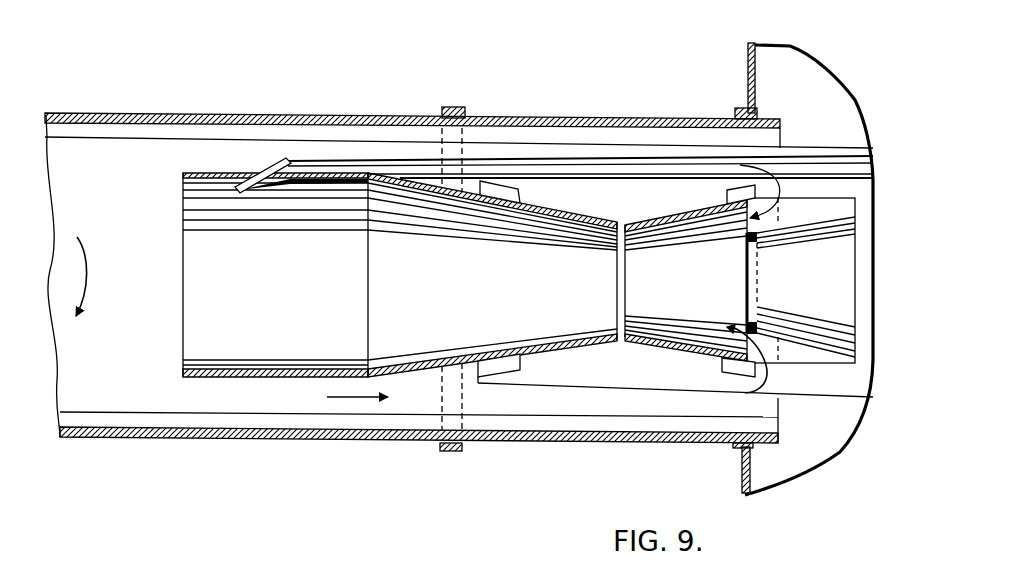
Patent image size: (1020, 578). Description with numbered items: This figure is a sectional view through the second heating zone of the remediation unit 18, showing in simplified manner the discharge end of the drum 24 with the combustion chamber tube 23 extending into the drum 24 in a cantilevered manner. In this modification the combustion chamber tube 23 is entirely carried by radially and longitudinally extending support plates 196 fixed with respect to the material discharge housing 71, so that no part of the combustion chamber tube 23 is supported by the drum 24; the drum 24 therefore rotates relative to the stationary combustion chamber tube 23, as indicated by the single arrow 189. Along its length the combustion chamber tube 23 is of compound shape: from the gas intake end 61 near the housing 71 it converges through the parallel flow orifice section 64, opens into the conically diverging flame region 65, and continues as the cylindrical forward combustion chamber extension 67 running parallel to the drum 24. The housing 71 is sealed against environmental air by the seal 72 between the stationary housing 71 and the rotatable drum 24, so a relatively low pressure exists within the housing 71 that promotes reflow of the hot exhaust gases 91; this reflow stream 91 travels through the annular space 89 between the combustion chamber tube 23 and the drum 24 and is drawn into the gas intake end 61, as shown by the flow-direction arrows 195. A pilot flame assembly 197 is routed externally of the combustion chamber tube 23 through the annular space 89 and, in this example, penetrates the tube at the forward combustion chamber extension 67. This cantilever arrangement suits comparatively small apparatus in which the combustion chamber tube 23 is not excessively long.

The remediation unit 18 is at (269, 77).
The drum 24 is at (170, 113).
The pilot flame assembly 197 is at (355, 160).
The combustion chamber tube 23 is at (397, 165).
The annular space 89 is at (498, 148).
The support plates 196 is at (583, 190).
The material discharge housing 71 is at (748, 57).
The seal 72 is at (740, 111).
The flow-direction arrows 195 is at (782, 182).
The gas intake end 61 is at (775, 217).
The orifice section 64 is at (617, 275).
The diverging flame region 65 is at (490, 252).
The forward combustion chamber extension 67 is at (284, 243).
The single arrow 189 is at (83, 289).
The hot exhaust gases 91 is at (365, 398).